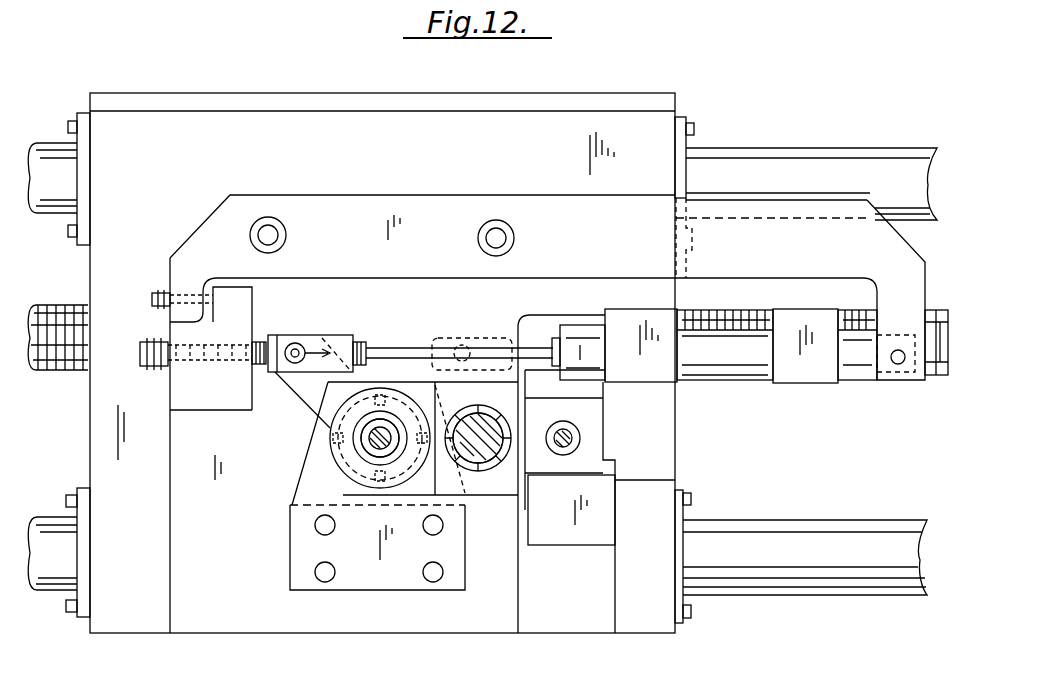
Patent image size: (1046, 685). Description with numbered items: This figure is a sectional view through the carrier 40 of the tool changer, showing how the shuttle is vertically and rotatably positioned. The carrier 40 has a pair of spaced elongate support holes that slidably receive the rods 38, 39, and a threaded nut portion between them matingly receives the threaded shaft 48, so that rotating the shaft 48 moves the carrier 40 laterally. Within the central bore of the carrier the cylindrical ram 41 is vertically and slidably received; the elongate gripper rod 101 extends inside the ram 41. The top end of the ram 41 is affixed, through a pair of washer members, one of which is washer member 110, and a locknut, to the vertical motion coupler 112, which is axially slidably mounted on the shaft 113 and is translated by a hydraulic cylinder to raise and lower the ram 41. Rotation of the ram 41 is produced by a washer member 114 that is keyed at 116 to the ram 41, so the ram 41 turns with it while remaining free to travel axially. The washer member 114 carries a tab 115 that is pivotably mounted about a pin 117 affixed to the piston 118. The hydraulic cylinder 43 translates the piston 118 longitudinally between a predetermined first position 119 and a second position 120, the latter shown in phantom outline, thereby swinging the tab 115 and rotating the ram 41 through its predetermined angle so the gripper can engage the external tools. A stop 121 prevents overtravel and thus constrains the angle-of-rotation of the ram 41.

The rod 38 is at (806, 170).
The rod 39 is at (785, 530).
The carrier 40 is at (366, 162).
The cylindrical ram 41 is at (328, 452).
The hydraulic cylinder 43 is at (726, 350).
The threaded shaft 48 is at (65, 320).
The gripper rod 101 is at (378, 437).
The washer member 110 is at (338, 420).
The vertical motion coupler 112 is at (478, 455).
The shaft 113 is at (482, 425).
The washer member 114 is at (383, 378).
The tab 115 is at (297, 378).
The key 116 is at (423, 472).
The pin 117 is at (295, 345).
The piston 118 is at (425, 347).
The first position 119 is at (347, 325).
The second position 120 is at (482, 336).
The stop 121 is at (255, 345).